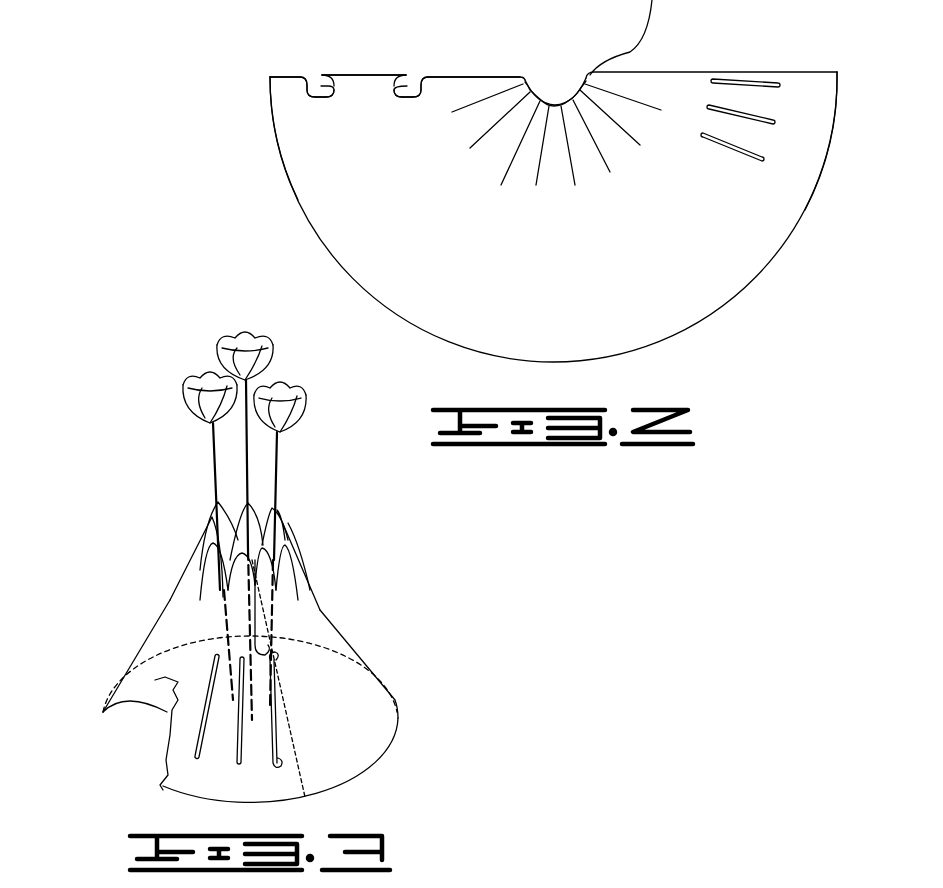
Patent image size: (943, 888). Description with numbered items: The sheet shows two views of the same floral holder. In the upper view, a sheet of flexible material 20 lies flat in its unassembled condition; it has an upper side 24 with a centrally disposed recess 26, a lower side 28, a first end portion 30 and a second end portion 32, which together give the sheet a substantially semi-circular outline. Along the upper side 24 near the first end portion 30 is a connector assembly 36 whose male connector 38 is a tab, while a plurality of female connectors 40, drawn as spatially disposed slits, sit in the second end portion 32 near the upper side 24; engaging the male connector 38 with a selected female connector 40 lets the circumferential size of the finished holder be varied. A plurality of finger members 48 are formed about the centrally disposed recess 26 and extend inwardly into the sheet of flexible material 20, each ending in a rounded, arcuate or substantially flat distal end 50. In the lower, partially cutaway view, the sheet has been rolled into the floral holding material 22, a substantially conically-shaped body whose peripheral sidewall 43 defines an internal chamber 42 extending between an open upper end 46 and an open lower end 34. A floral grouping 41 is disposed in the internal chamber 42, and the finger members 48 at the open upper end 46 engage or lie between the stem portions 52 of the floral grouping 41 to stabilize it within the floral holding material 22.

In FIG. 2, the sheet of flexible material 20 is at (695, 45).
In FIG. 3, the floral holding material 22 is at (430, 568).
In FIG. 2, the upper side 24 is at (500, 74).
In FIG. 2, the centrally disposed recess 26 is at (557, 87).
In FIG. 2, the lower side 28 is at (570, 361).
In FIG. 2, the first end portion 30 is at (298, 197).
In FIG. 2, the second end portion 32 is at (806, 208).
In FIG. 3, the open lower end 34 is at (185, 797).
In FIG. 2, the connector assembly 36 is at (343, 60).
In FIG. 3, the connector assembly 36 is at (282, 726).
In FIG. 2, the male connector 38 is at (380, 66).
In FIG. 2, the female connectors 40 is at (785, 88).
In FIG. 3, the floral grouping 41 is at (185, 362).
In FIG. 3, the internal chamber 42 is at (105, 710).
In FIG. 3, the peripheral sidewall 43 is at (355, 633).
In FIG. 3, the open upper end 46 is at (217, 500).
In FIG. 3, the finger members 48 is at (290, 578).
In FIG. 3, the distal end 50 is at (283, 549).
In FIG. 3, the stem portions 52 is at (216, 455).